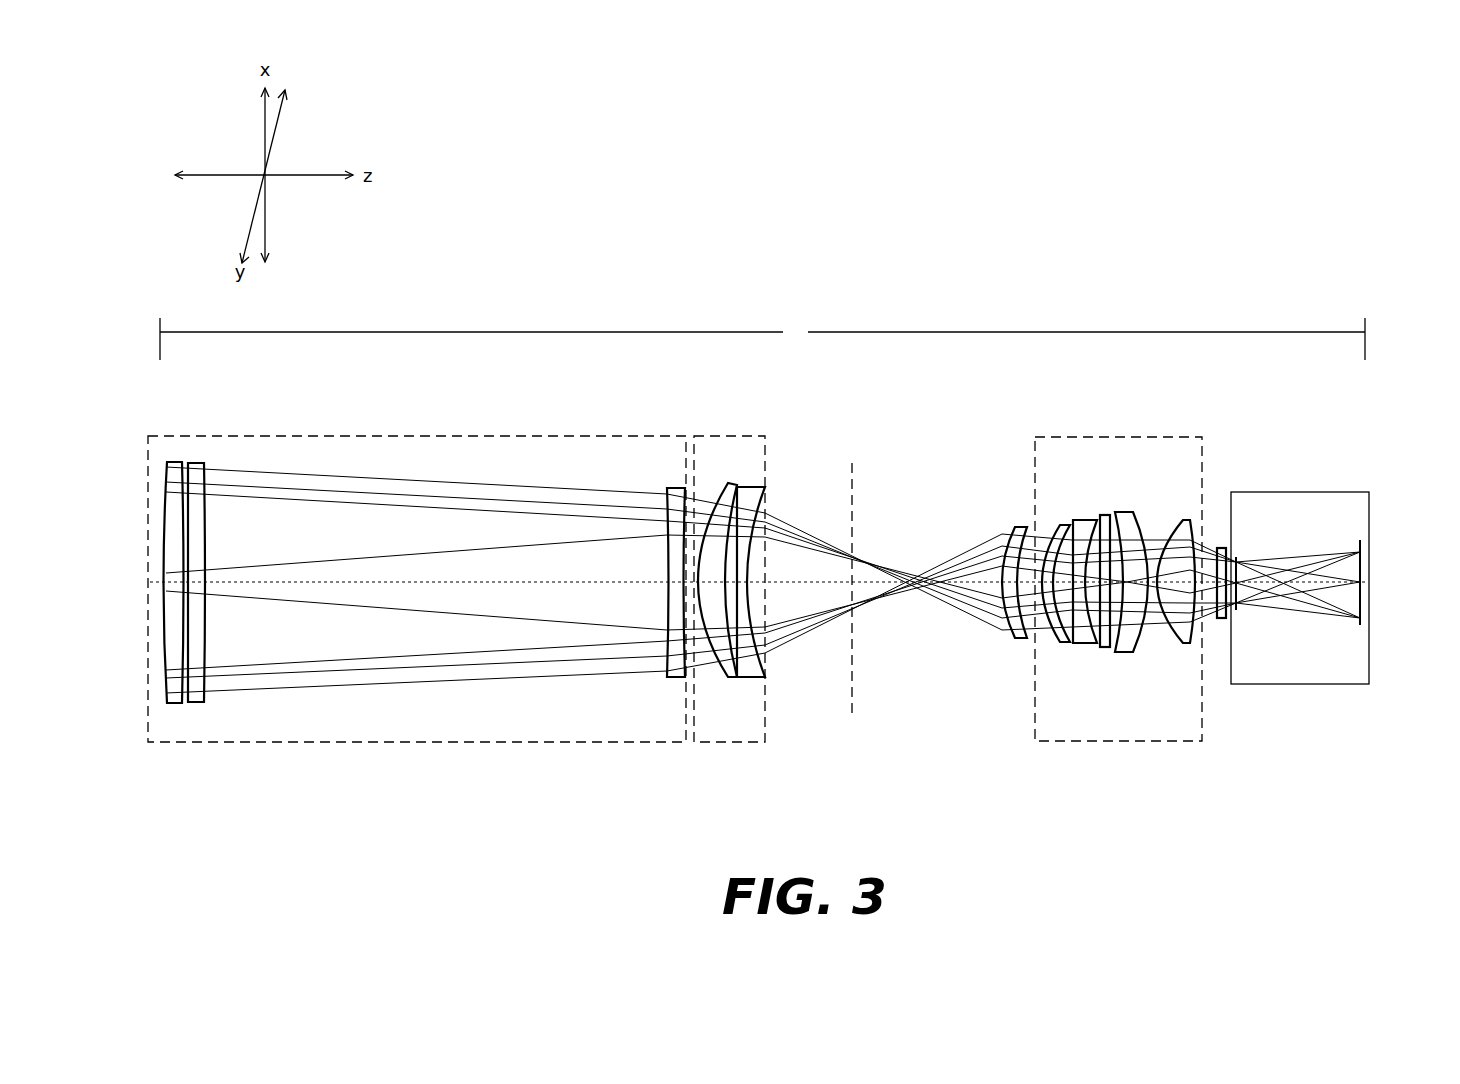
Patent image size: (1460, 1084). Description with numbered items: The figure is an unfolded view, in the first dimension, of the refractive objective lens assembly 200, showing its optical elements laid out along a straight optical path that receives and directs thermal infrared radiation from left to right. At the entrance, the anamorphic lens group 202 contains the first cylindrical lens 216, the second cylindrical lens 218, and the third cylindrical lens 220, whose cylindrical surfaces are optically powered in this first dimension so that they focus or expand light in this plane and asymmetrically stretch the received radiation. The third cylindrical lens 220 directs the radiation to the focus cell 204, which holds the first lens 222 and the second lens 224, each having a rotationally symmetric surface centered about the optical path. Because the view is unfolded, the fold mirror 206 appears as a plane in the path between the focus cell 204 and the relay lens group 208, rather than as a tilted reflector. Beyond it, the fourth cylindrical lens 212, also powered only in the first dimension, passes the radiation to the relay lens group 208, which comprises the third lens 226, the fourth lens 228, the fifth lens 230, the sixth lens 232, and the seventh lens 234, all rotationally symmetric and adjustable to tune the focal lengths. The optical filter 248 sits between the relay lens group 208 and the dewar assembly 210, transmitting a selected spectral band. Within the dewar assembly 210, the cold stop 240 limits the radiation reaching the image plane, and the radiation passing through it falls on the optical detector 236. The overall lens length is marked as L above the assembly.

The refractive objective lens assembly 200 is at (682, 310).
The anamorphic lens group 202 is at (505, 433).
The focus cell 204 is at (738, 745).
The fold mirror 206 is at (852, 700).
The relay lens group 208 is at (1083, 742).
The dewar assembly 210 is at (1304, 686).
The fourth cylindrical lens 212 is at (1020, 528).
The first cylindrical lens 216 is at (168, 462).
The second cylindrical lens 218 is at (198, 463).
The third cylindrical lens 220 is at (676, 680).
The first lens 222 is at (725, 485).
The second lens 224 is at (755, 487).
The third lens 226 is at (1056, 523).
The fourth lens 228 is at (1090, 520).
The fifth lens 230 is at (1103, 515).
The sixth lens 232 is at (1123, 512).
The seventh lens 234 is at (1190, 520).
The optical detector 236 is at (1362, 568).
The cold stop 240 is at (1226, 548).
The optical filter 248 is at (1237, 612).